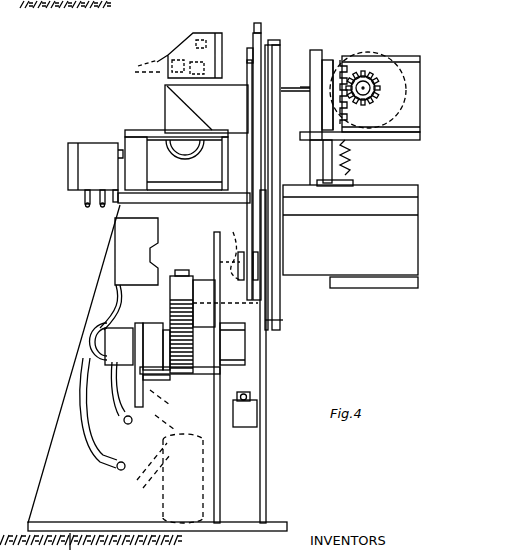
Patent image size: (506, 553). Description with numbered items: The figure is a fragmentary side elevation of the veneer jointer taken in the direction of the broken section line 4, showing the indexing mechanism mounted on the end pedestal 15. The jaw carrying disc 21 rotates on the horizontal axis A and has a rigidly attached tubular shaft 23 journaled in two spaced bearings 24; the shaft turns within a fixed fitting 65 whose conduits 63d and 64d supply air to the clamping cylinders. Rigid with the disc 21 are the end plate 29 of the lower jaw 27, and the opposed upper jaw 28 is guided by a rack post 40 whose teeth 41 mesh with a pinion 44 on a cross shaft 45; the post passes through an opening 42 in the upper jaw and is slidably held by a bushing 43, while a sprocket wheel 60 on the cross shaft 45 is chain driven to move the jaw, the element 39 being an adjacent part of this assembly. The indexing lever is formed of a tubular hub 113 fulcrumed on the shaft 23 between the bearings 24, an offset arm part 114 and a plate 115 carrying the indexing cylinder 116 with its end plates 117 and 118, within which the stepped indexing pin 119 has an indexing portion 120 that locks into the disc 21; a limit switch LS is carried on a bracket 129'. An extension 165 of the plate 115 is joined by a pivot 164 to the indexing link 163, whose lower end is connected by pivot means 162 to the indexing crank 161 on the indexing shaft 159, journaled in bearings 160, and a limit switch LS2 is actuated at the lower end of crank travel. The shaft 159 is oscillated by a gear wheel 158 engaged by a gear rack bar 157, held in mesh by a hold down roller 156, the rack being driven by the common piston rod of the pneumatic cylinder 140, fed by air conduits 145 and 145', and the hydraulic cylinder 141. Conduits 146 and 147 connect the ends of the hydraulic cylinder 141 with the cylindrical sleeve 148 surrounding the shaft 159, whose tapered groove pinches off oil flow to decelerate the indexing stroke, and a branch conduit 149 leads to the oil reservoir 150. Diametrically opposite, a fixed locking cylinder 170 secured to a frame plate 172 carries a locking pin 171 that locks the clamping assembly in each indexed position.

The section line 4— 4 is at (372, 1).
The fitting or sleeve 65 is at (106, 174).
The horizontal axis A is at (67, 163).
The conduit 63d is at (84, 198).
The conduit 64d is at (102, 205).
The offset angular arm part 114 is at (167, 125).
The tubular hub 113 is at (200, 176).
The tubular shaft 23 is at (121, 142).
The plate 115 is at (247, 98).
The indexing link 163 is at (250, 110).
The indexing pin 119 is at (189, 52).
The bracket 129' is at (146, 35).
The limit switch LS is at (135, 59).
The end plate 117 is at (218, 34).
The indexing cylinder 116 is at (236, 36).
The end plate 118 is at (270, 40).
The indexing portion 120 is at (279, 52).
The pivot 164 is at (252, 60).
The extension 165 is at (266, 60).
The bearings 24 is at (228, 207).
The oil reservoir 150 is at (144, 240).
The gear wheel 158 is at (124, 300).
The end pedestal 15 is at (108, 255).
The locking cylinder 170 is at (212, 241).
The hold down roller 156 is at (185, 274).
The gear rack bar 157 is at (170, 300).
The bearings 160 is at (147, 326).
The cylindrical sleeve 148 is at (105, 330).
The branch conduit 149 is at (92, 330).
The conduit 146 is at (85, 420).
The conduit 147 is at (113, 424).
The air conduit 145 is at (170, 456).
The air conduit 145' is at (121, 501).
The hydraulic cylinder 141 is at (210, 432).
The pneumatic cylinder 140 is at (203, 510).
The limit switch LS2 is at (252, 418).
The indexing crank 161 is at (245, 323).
The indexing shaft 159 is at (193, 345).
The pivot means 162 is at (236, 248).
The frame plate 172 is at (283, 321).
The locking pin 171 is at (305, 284).
The jaw carrying disc 21 is at (273, 290).
The end plate 29 is at (266, 248).
The lower jaw or platen 27 is at (418, 298).
The plate 39 is at (313, 88).
The bushing 43 is at (338, 60).
The upper jaw or platen 28 is at (420, 48).
The pinion 44 is at (372, 66).
The sprocket wheel 60 is at (375, 90).
The cross shaft 45 is at (366, 90).
The rack post 40 is at (342, 171).
The teeth 41 is at (352, 152).
The opening 42 is at (378, 138).